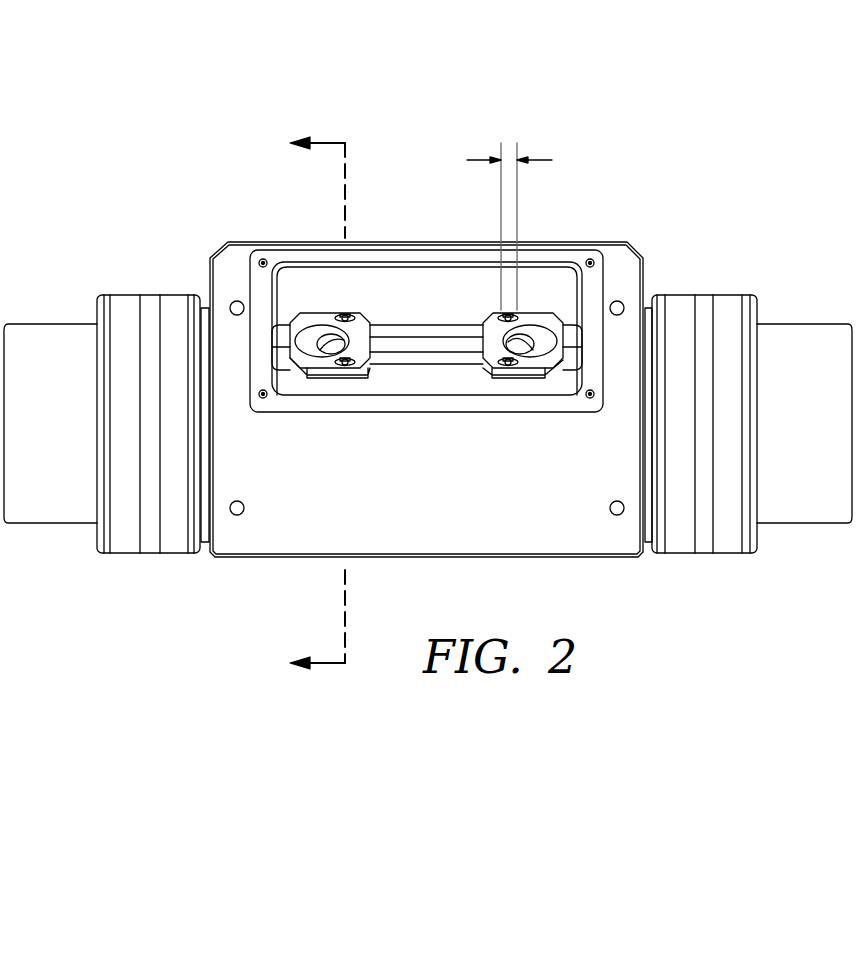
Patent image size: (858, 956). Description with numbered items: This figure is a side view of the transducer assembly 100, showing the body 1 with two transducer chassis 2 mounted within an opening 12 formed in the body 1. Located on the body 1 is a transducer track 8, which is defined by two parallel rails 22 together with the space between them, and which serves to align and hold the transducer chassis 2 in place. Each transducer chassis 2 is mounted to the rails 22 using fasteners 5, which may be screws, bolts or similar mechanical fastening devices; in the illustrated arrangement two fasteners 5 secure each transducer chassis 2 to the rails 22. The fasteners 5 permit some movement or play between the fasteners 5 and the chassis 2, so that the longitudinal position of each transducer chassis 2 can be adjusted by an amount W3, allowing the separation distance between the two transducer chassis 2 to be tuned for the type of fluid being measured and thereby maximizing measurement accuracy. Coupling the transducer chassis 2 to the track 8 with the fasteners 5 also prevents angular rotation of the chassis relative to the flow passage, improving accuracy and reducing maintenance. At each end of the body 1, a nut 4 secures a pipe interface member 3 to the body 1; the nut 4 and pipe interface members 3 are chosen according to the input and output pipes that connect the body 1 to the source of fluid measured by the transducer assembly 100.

The transducer assembly 100 is at (659, 76).
The body 1 is at (583, 556).
The transducer chassis 2 is at (316, 313).
The pipe interface member 3 is at (40, 324).
The nut 4 is at (148, 295).
The fastener 5 is at (345, 314).
The transducer track 8 is at (455, 343).
The opening 12 is at (536, 276).
The parallel rails 22 is at (412, 363).
The adjustment amount W3 is at (512, 160).